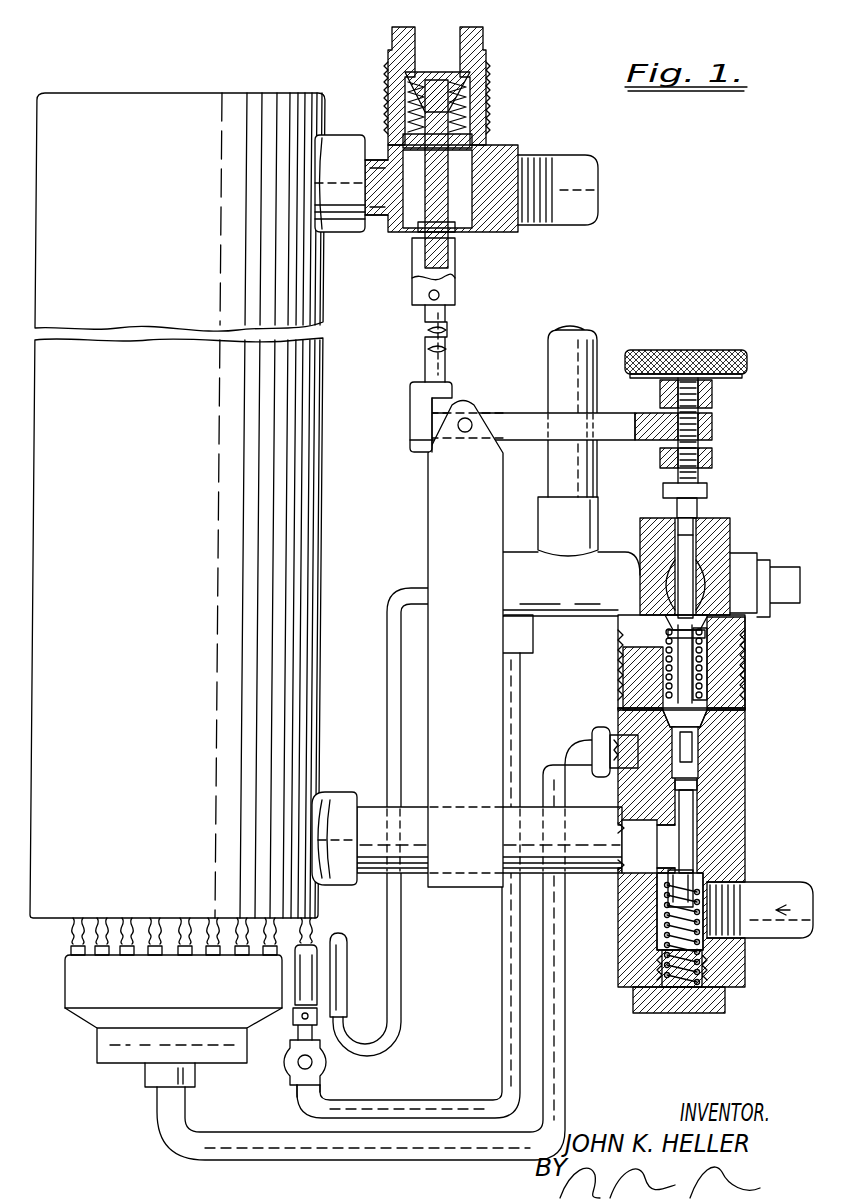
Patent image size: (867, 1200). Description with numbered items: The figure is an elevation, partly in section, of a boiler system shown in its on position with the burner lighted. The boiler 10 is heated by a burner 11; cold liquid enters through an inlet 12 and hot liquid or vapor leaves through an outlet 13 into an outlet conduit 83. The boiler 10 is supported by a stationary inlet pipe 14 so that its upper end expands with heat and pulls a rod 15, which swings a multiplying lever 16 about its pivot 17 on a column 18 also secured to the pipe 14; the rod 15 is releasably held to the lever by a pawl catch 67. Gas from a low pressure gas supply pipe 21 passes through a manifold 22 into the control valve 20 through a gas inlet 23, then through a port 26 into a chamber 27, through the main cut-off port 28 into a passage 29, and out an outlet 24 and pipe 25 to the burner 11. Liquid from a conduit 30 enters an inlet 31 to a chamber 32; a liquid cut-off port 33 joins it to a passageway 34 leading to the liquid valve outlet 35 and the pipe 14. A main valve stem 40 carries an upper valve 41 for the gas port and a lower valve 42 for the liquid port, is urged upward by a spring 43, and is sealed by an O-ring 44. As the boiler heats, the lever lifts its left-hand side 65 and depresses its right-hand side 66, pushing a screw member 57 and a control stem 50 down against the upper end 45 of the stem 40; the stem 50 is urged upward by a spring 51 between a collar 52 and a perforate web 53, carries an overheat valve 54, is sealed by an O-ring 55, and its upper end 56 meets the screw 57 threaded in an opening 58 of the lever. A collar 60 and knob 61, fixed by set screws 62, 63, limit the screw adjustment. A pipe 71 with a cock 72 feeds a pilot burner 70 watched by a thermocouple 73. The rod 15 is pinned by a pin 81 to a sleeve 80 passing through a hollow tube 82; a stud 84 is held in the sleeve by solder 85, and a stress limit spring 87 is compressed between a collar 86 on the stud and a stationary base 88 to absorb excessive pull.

The boiler 10 is at (178, 514).
The burner 11 is at (190, 1003).
The inlet 12 is at (335, 800).
The outlet 13 is at (345, 138).
The stationary inlet pipe 14 is at (520, 852).
The rod 15 is at (425, 352).
The multiplying lever 16 is at (520, 413).
The pivot 17 is at (465, 433).
The column 18 is at (465, 644).
The control valve 20 is at (619, 989).
The low pressure gas supply pipe 21 is at (555, 345).
The manifold 22 is at (592, 602).
The gas inlet 23 is at (700, 580).
The outlet 24 is at (610, 760).
The pipe 25 is at (565, 1082).
The port 26 is at (705, 634).
The chamber 27 is at (718, 682).
The main cut-off port 28 is at (702, 728).
The passage 29 is at (697, 760).
The conduit 30 is at (772, 890).
The inlet 31 is at (712, 897).
The chamber 32 is at (660, 930).
The liquid cut-off port 33 is at (715, 903).
The passageway 34 is at (665, 852).
The liquid valve outlet 35 is at (628, 840).
The main valve stem 40 is at (694, 812).
The upper valve 41 is at (705, 709).
The lower valve 42 is at (670, 900).
The spring 43 is at (695, 945).
The O-ring 44 is at (697, 786).
The upper end 45 is at (665, 708).
The control stem 50 is at (677, 508).
The spring 51 is at (702, 657).
The collar 52 is at (665, 633).
The perforate web 53 is at (655, 682).
The overheat valve 54 is at (668, 618).
The O-ring 55 is at (695, 535).
The upper end 56 is at (710, 498).
The screw member 57 is at (676, 476).
The opening 58 is at (713, 430).
The collar 60 is at (712, 476).
The knob 61 is at (747, 362).
The set screw 62 is at (713, 462).
The set screw 63 is at (716, 400).
The left-hand side 65 is at (403, 438).
The right-hand side 66 is at (660, 418).
The pawl catch 67 is at (425, 448).
The pilot burner 70 is at (296, 982).
The pipe 71 is at (450, 1115).
The cock 72 is at (290, 1070).
The thermocouple 73 is at (370, 912).
The sleeve 80 is at (452, 165).
The pin 81 is at (435, 255).
The hollow tube 82 is at (425, 228).
The outlet conduit 83 is at (388, 180).
The stud 84 is at (450, 128).
The solder 85 is at (468, 205).
The collar 86 is at (440, 75).
The stress limit spring 87 is at (405, 100).
The stationary base 88 is at (415, 143).